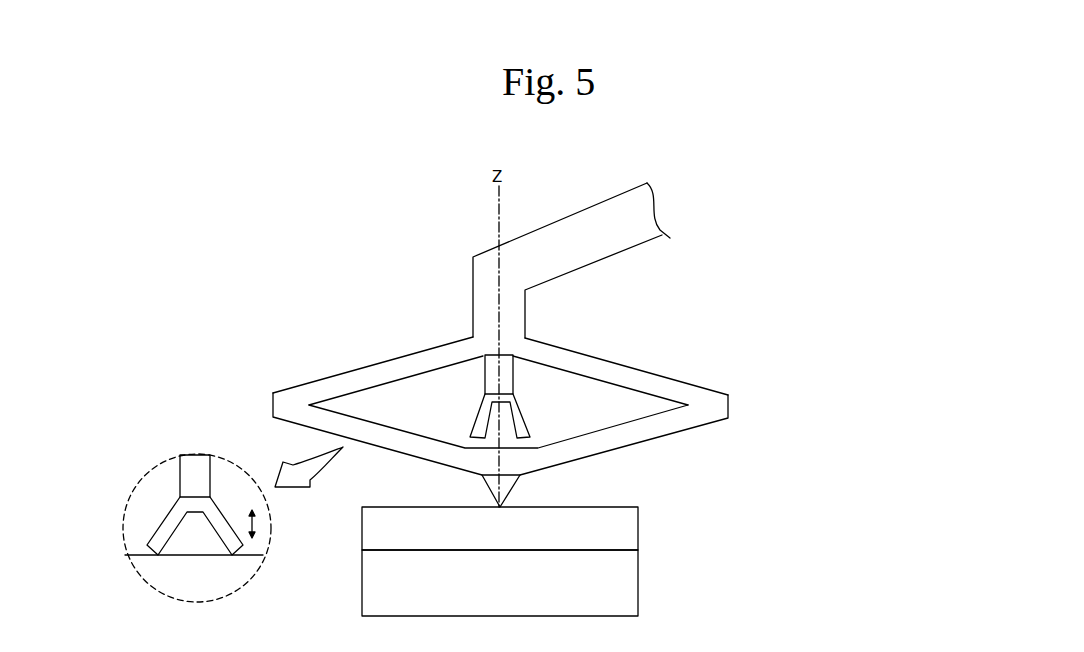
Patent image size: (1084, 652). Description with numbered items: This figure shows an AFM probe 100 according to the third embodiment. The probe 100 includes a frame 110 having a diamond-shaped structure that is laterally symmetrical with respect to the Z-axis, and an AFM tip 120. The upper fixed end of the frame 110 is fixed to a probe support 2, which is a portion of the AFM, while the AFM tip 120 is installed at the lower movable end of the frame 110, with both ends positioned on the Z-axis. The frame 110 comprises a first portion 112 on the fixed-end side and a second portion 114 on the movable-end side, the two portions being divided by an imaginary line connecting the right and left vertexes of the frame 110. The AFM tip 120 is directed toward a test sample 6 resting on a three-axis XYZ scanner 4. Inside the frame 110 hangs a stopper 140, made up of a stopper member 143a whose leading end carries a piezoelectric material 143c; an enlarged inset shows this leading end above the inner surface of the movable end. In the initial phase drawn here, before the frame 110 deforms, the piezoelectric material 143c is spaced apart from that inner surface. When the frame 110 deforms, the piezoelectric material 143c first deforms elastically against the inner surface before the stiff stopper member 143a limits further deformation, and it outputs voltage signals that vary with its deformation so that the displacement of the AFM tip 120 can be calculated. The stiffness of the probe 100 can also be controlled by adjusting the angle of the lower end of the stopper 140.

The probe support 2 is at (595, 213).
The XYZ scanner 4 is at (638, 582).
The test sample 6 is at (638, 528).
The AFM probe 100 is at (491, 424).
The frame 110 is at (591, 406).
The first portion 112 is at (707, 387).
The second portion 114 is at (710, 422).
The AFM tip 120 is at (510, 493).
The stopper 140 is at (377, 424).
The stopper member 143a is at (513, 370).
The piezoelectric material 143c is at (522, 413).